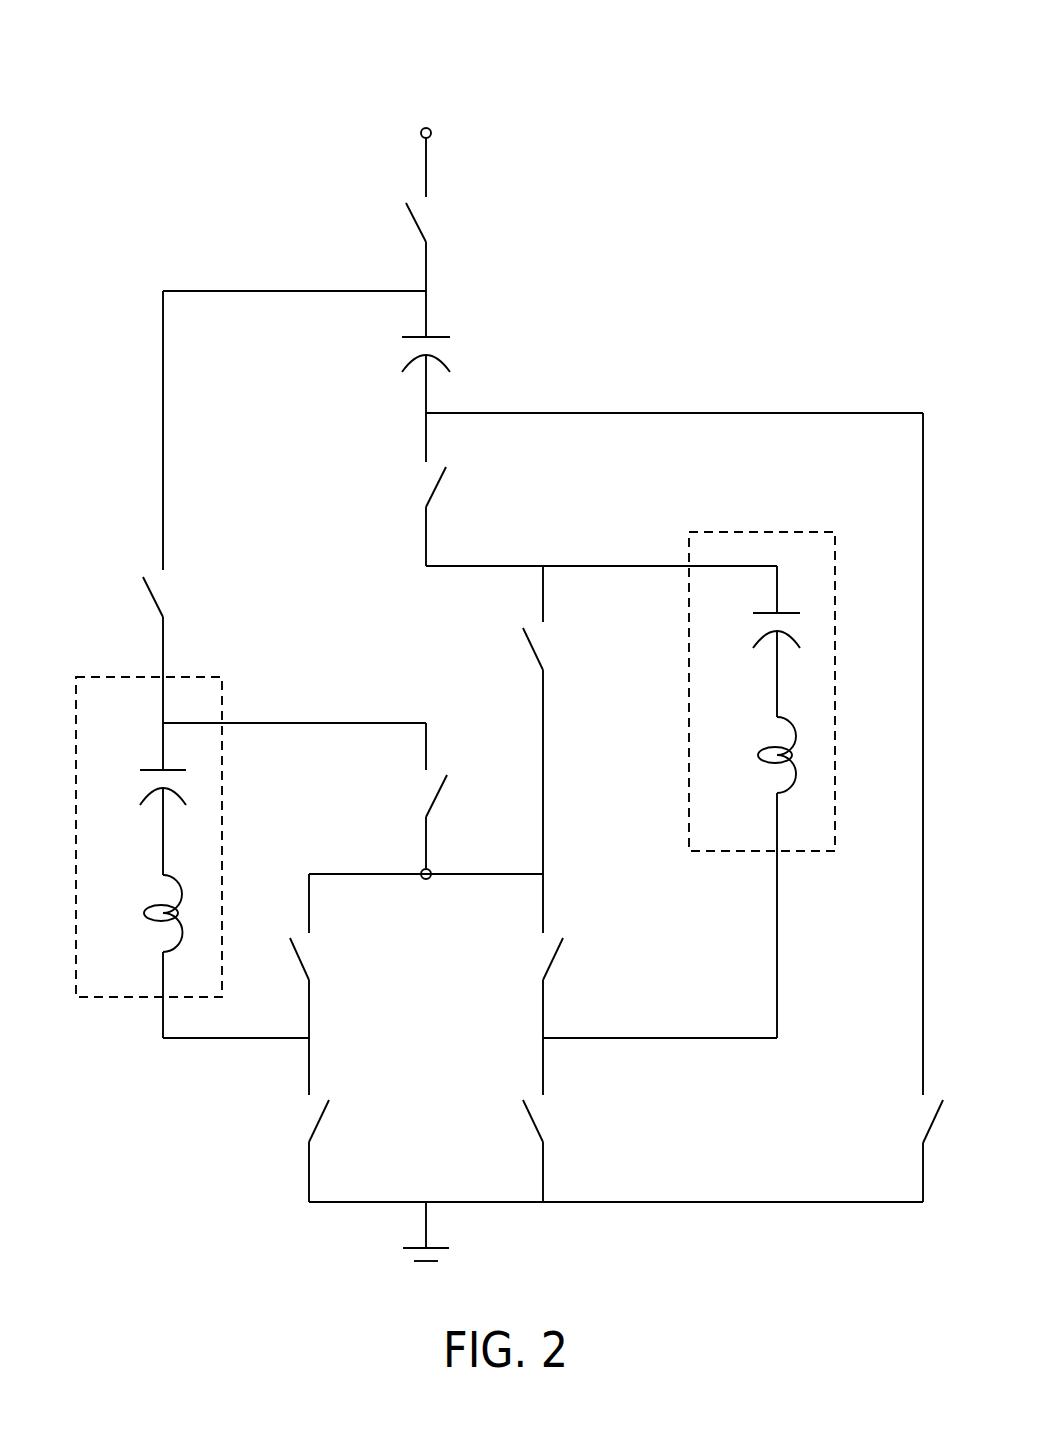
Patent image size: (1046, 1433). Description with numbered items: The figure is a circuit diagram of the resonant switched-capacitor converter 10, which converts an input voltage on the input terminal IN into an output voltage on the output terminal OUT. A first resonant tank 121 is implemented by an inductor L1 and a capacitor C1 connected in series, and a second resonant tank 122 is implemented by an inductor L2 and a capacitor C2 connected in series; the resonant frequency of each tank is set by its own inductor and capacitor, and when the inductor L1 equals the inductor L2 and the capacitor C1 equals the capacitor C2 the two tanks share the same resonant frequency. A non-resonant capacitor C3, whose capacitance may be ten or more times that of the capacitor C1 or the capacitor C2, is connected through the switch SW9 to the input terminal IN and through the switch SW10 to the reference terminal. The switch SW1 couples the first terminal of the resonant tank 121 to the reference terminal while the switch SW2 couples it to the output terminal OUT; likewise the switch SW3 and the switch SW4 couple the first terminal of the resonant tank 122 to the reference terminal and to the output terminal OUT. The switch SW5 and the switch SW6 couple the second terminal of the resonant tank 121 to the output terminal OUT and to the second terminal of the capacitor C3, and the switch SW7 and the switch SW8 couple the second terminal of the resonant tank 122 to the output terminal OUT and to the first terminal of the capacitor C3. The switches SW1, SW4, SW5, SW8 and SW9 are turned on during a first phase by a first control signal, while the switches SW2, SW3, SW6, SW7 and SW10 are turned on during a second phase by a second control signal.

The resonant switched-capacitor converter 10 is at (813, 45).
The resonant tank 121 is at (115, 677).
The resonant tank 122 is at (760, 531).
The input terminal IN is at (432, 128).
The output terminal OUT is at (426, 880).
The switch SW1 is at (286, 1121).
The switch SW2 is at (333, 959).
The switch SW3 is at (566, 1121).
The switch SW4 is at (519, 959).
The switch SW5 is at (403, 796).
The switch SW6 is at (186, 597).
The switch SW7 is at (565, 649).
The switch SW8 is at (402, 487).
The switch SW9 is at (449, 222).
The switch SW10 is at (892, 1121).
The capacitor C1 is at (144, 786).
The capacitor C2 is at (756, 629).
The capacitor C3 is at (445, 354).
The inductor L1 is at (142, 913).
The inductor L2 is at (754, 755).